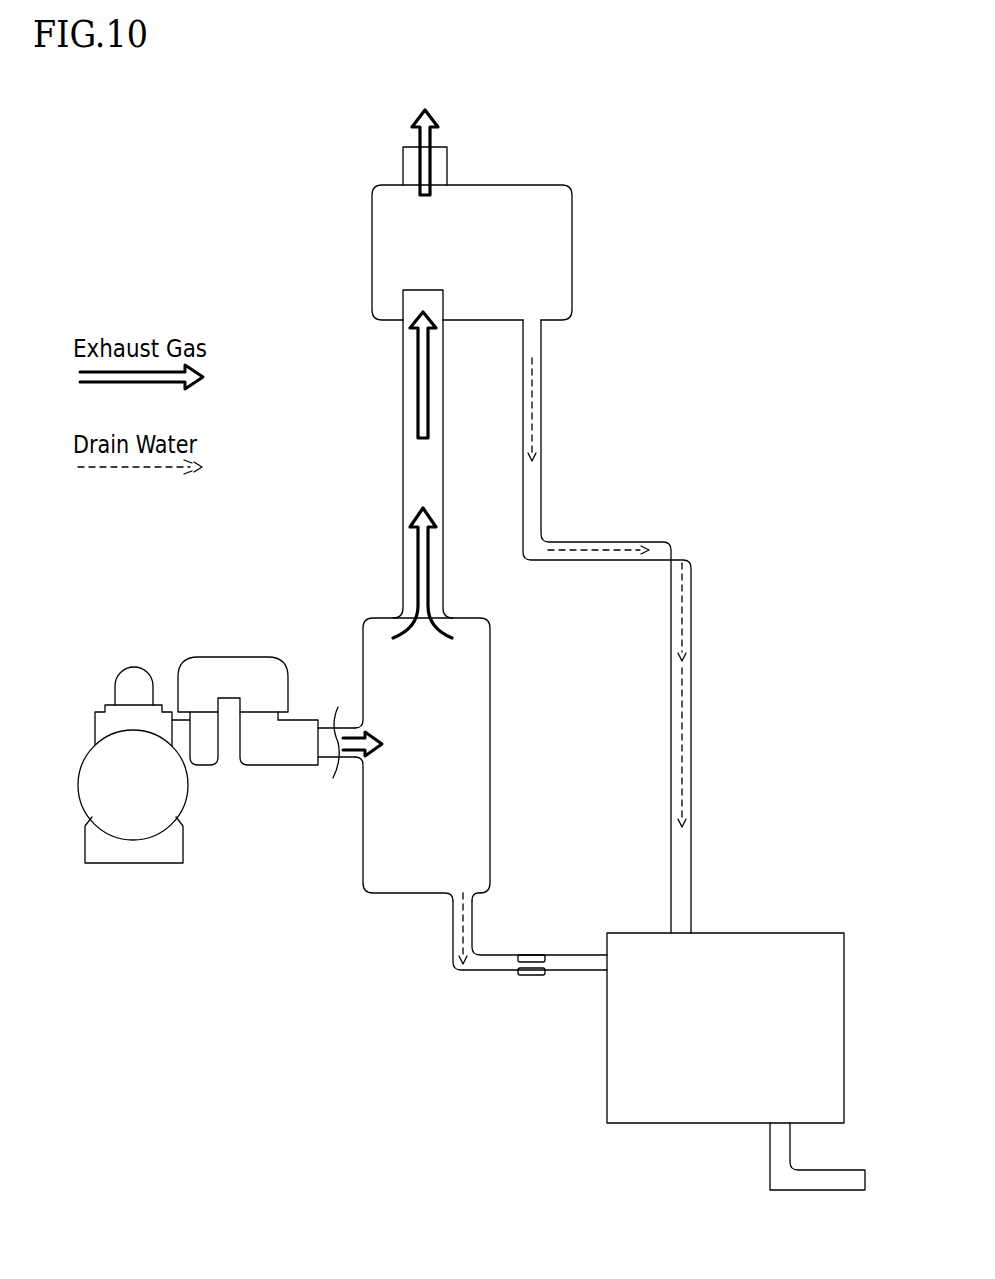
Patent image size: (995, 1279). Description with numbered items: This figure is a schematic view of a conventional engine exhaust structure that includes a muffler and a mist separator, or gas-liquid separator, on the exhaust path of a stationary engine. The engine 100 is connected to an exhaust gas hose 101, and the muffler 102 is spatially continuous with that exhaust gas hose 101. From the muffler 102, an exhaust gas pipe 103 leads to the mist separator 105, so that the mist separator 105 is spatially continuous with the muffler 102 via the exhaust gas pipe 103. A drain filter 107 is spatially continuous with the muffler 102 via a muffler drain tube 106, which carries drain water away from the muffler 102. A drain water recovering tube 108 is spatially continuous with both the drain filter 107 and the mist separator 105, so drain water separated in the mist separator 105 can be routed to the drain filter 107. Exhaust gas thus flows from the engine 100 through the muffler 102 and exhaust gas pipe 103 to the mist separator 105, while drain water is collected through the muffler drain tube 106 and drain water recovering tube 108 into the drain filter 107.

The engine 100 is at (102, 785).
The exhaust gas hose 101 is at (280, 748).
The muffler 102 is at (490, 753).
The exhaust gas pipe 103 is at (403, 425).
The mist separator 105 is at (562, 255).
The muffler drain tube 106 is at (490, 975).
The drain filter 107 is at (748, 933).
The drain water recovering tube 108 is at (541, 427).